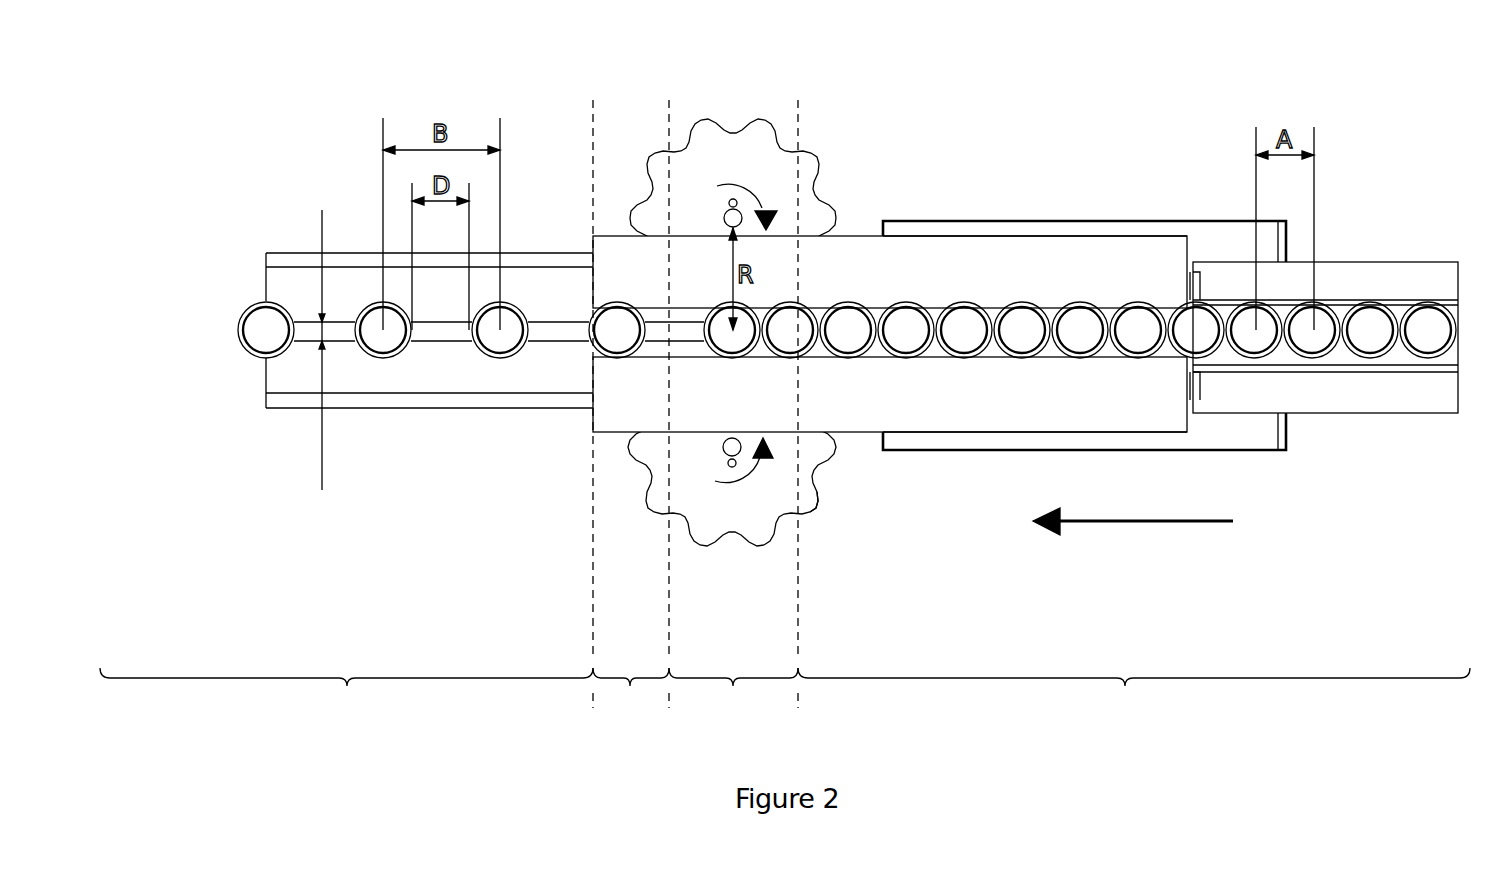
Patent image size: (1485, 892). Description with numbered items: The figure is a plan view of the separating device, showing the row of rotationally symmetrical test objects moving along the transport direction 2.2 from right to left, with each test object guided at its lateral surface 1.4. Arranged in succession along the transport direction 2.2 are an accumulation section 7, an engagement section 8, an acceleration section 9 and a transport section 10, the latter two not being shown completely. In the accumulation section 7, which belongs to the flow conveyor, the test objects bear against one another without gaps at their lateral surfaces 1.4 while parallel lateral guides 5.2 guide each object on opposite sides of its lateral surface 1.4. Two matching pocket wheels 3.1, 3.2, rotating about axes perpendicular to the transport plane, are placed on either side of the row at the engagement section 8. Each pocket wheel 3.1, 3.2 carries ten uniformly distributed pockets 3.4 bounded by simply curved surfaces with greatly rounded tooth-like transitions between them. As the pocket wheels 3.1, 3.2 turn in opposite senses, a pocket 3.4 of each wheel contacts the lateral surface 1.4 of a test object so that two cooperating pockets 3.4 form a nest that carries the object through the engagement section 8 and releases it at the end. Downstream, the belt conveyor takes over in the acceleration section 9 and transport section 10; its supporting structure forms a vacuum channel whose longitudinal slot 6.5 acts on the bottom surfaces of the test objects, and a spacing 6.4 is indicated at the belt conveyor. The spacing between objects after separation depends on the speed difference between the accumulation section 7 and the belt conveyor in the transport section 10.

The pocket wheel 3.1 is at (724, 163).
The pocket wheel 3.2 is at (722, 510).
The pocket 3.4 is at (822, 478).
The lateral surface 1.4 is at (1370, 300).
The lateral guide 5.2 is at (1383, 372).
The spacing 6.4 is at (322, 455).
The longitudinal slot 6.5 is at (435, 332).
The transport direction 2.2 is at (1100, 523).
The accumulation section 7 is at (1134, 695).
The engagement section 8 is at (733, 695).
The acceleration section 9 is at (631, 695).
The transport section 10 is at (346, 695).